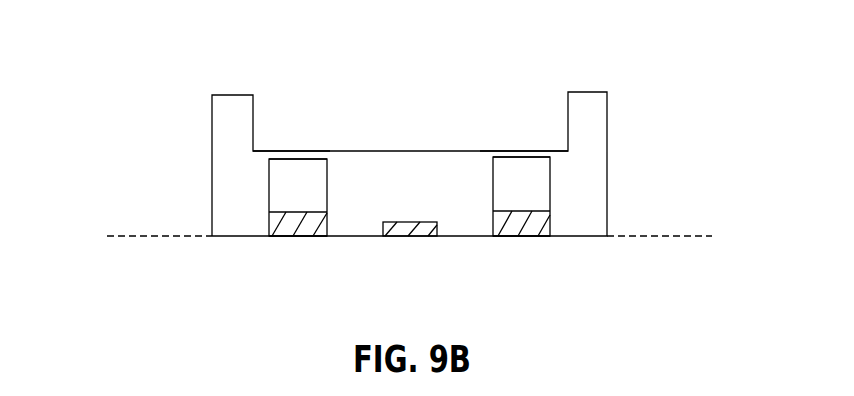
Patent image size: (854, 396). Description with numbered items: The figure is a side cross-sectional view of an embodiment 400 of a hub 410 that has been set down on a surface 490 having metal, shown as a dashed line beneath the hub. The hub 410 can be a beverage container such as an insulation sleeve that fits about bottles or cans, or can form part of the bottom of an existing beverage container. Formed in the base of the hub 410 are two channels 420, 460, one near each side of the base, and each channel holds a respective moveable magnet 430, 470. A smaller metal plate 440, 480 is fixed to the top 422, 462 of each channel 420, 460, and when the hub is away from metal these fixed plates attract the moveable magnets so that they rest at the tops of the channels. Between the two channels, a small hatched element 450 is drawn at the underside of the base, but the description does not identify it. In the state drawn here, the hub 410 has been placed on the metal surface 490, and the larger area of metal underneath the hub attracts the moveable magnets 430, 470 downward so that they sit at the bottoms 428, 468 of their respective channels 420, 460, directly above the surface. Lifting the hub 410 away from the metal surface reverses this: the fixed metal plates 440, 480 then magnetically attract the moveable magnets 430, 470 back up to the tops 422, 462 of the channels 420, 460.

The embodiment 400 is at (183, 63).
The hub 410 is at (227, 163).
The channel 420 is at (300, 180).
The top of channel 422 is at (290, 151).
The bottom of channel 428 is at (285, 237).
The moveable magnet 430 is at (313, 227).
The metal plate 440 is at (318, 159).
The central conductive pad 450 is at (423, 223).
The channel 460 is at (525, 175).
The top of channel 462 is at (513, 151).
The bottom of channel 468 is at (523, 237).
The moveable magnet 470 is at (545, 218).
The metal plate 480 is at (535, 157).
The surface having metal 490 is at (143, 237).